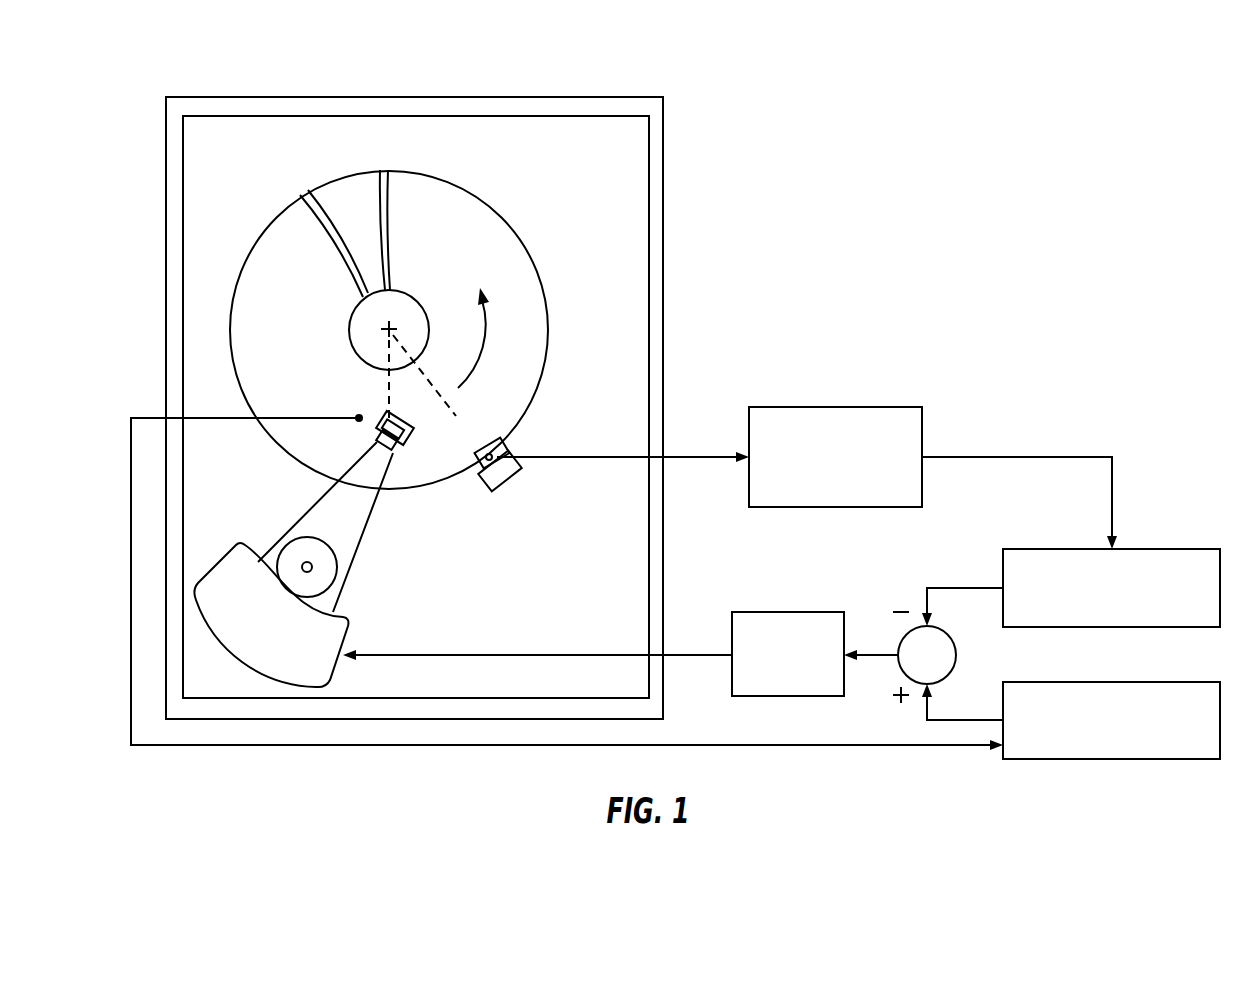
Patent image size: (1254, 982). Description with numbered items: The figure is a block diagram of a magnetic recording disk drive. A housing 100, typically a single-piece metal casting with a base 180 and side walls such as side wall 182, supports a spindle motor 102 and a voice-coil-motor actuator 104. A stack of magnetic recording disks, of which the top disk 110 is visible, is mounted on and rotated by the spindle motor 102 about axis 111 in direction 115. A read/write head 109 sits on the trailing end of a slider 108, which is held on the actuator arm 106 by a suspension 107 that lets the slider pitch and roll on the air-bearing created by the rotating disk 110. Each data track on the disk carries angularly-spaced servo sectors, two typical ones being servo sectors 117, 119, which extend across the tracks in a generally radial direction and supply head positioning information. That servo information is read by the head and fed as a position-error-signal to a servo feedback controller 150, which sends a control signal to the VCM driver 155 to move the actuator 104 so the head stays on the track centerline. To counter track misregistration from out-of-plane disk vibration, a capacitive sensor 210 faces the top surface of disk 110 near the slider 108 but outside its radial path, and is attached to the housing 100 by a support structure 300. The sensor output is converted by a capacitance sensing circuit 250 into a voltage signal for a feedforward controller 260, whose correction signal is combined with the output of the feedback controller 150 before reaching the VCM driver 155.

The housing 100 is at (612, 97).
The base 180 is at (635, 163).
The side wall 182 is at (655, 201).
The top disk 110 is at (287, 260).
The spindle motor 102 is at (402, 307).
The axis 111 is at (382, 345).
The servo sector 119 is at (303, 197).
The servo sector 117 is at (380, 170).
The direction 115 is at (483, 352).
The voice-coil-motor (VCM) actuator 104 is at (313, 525).
The actuator arm 106 is at (362, 490).
The suspension 107 is at (382, 458).
The slider 108 is at (380, 418).
The read/write head 109 is at (408, 413).
The support structure 300 is at (507, 483).
The capacitive sensor 210 is at (487, 443).
The capacitance sensing circuit 250 is at (877, 407).
The feedforward controller 260 is at (1180, 548).
The VCM driver 155 is at (817, 612).
The servo feedback controller 150 is at (1180, 682).